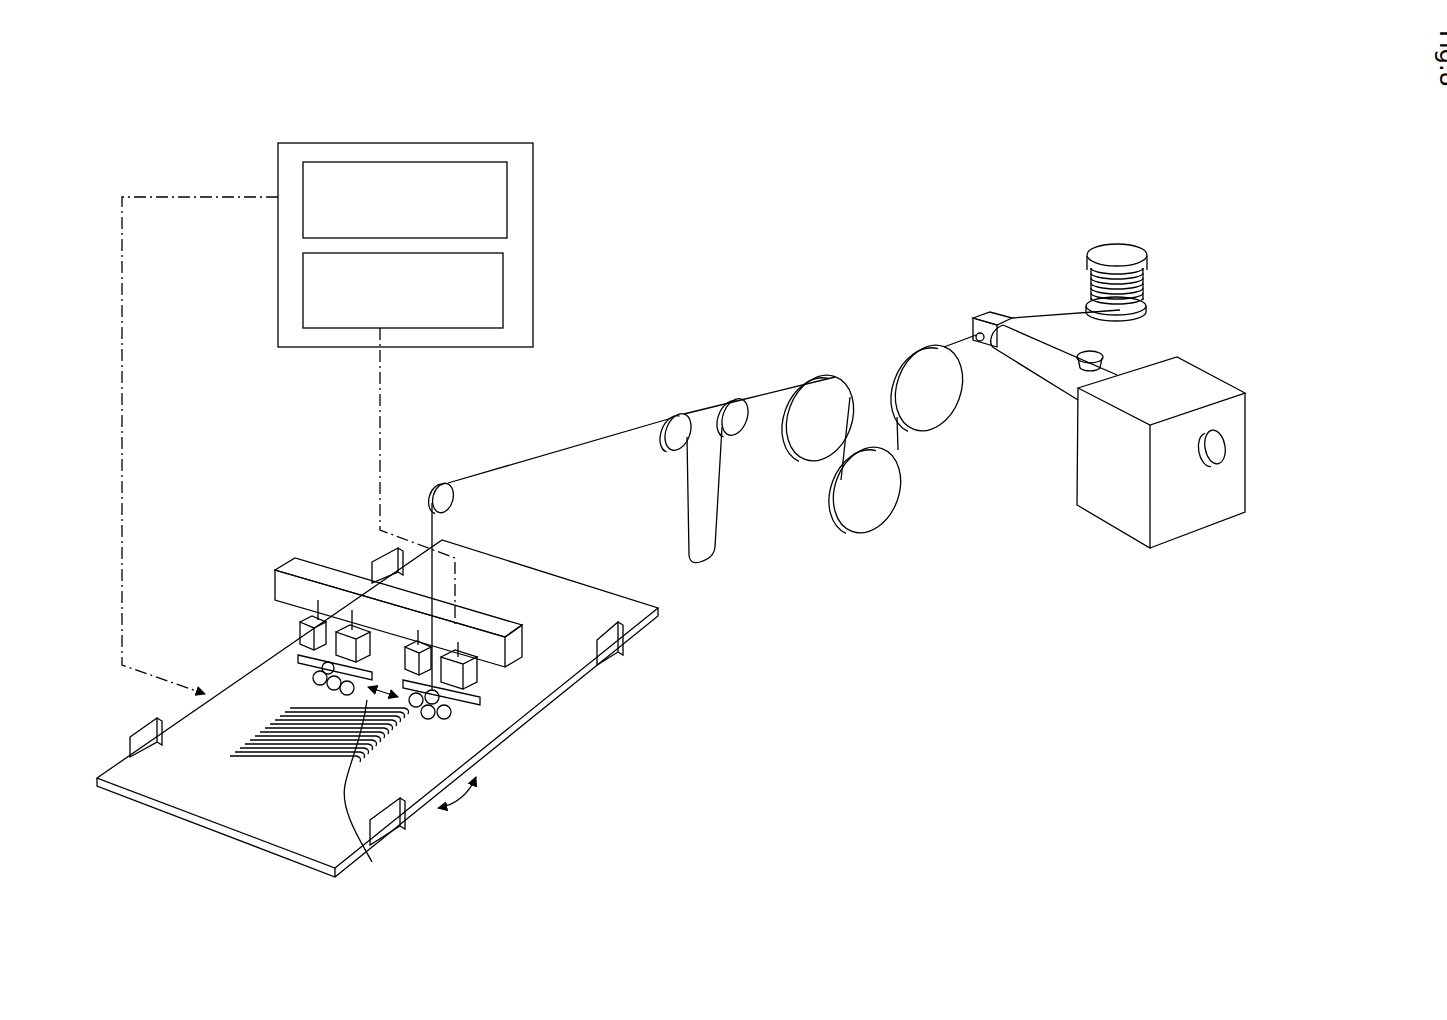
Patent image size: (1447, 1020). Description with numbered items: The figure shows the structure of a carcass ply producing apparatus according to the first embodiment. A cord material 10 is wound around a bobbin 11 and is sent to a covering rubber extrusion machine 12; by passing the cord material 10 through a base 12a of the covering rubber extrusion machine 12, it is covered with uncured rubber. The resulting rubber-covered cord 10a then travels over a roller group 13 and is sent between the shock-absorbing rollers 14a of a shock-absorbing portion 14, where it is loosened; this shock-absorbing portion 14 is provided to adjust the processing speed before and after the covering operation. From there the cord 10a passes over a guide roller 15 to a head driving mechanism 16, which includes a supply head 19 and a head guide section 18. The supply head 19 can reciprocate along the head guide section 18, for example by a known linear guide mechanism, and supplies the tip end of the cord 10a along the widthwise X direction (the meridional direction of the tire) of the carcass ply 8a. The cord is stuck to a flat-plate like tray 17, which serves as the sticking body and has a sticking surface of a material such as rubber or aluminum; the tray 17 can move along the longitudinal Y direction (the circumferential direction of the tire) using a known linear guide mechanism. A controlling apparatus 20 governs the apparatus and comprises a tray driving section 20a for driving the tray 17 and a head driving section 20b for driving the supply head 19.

The carcass ply 8a is at (298, 703).
The cord material 10 is at (1050, 315).
The cord 10a is at (570, 447).
The bobbin 11 is at (1130, 253).
The covering rubber extrusion machine 12 is at (1201, 355).
The base 12a is at (979, 343).
The roller group 13 is at (867, 365).
The shock-absorbing portion 14 is at (728, 537).
The shock-absorbing rollers 14a is at (740, 406).
The guide roller 15 is at (447, 482).
The head driving mechanism 16 is at (313, 552).
The tray 17 is at (256, 845).
The head guide section 18 is at (502, 638).
The supply head 19 is at (486, 689).
The controlling apparatus 20 is at (535, 191).
The tray driving section 20a is at (418, 162).
The head driving section 20b is at (503, 283).